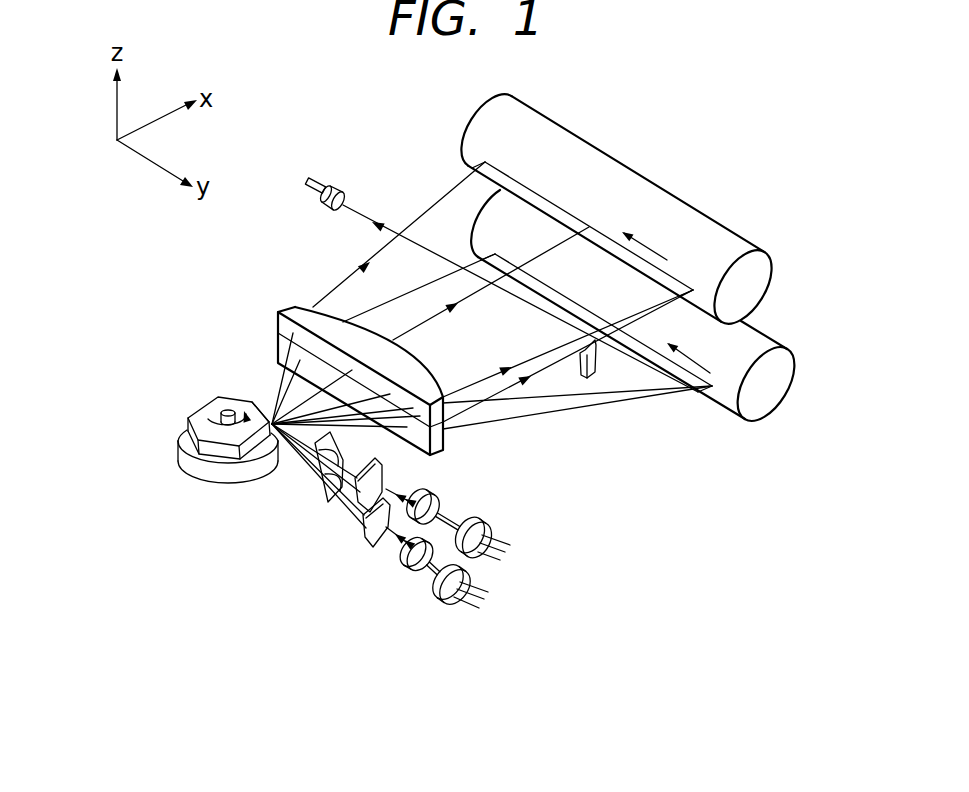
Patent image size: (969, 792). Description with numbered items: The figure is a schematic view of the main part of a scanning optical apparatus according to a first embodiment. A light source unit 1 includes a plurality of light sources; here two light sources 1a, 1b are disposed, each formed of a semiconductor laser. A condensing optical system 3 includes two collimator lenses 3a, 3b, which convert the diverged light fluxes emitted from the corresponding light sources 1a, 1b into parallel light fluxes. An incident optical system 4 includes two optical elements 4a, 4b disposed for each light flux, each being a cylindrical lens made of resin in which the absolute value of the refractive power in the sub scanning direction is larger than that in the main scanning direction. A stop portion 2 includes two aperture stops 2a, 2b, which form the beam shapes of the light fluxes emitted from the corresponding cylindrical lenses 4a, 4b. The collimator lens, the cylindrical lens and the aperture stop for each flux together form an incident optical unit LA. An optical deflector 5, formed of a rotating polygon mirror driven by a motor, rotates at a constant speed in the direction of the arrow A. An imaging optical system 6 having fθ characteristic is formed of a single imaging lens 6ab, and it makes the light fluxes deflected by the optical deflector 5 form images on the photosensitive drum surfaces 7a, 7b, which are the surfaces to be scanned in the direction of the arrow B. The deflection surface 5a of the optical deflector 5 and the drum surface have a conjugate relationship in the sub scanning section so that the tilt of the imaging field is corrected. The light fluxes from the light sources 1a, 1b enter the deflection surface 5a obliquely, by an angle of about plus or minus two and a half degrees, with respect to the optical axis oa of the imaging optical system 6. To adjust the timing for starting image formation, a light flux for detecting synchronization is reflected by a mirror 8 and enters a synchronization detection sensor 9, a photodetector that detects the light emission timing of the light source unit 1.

The light source unit 1 is at (475, 601).
The light source 1a is at (447, 613).
The light source 1b is at (494, 526).
The stop portion 2 is at (332, 506).
The aperture stop 2a is at (326, 500).
The aperture stop 2b is at (343, 456).
The condensing optical system 3 is at (429, 561).
The collimator lens 3a is at (406, 567).
The collimator lens 3b is at (440, 496).
The incident optical system 4 is at (378, 539).
The cylindrical lens 4a is at (366, 531).
The cylindrical lens 4b is at (387, 466).
The optical deflector 5 is at (230, 424).
The deflection surface 5a is at (278, 452).
The imaging optical system 6 is at (335, 333).
The imaging lens 6ab is at (291, 308).
The photosensitive drum surface 7a is at (613, 157).
The photosensitive drum surface 7b is at (757, 423).
The mirror 8 is at (597, 368).
The synchronization detection sensor 9 is at (338, 188).
The optical axis oa is at (415, 332).
The arrow A is at (178, 434).
The arrow B is at (666, 299).
The incident optical unit LA is at (297, 617).